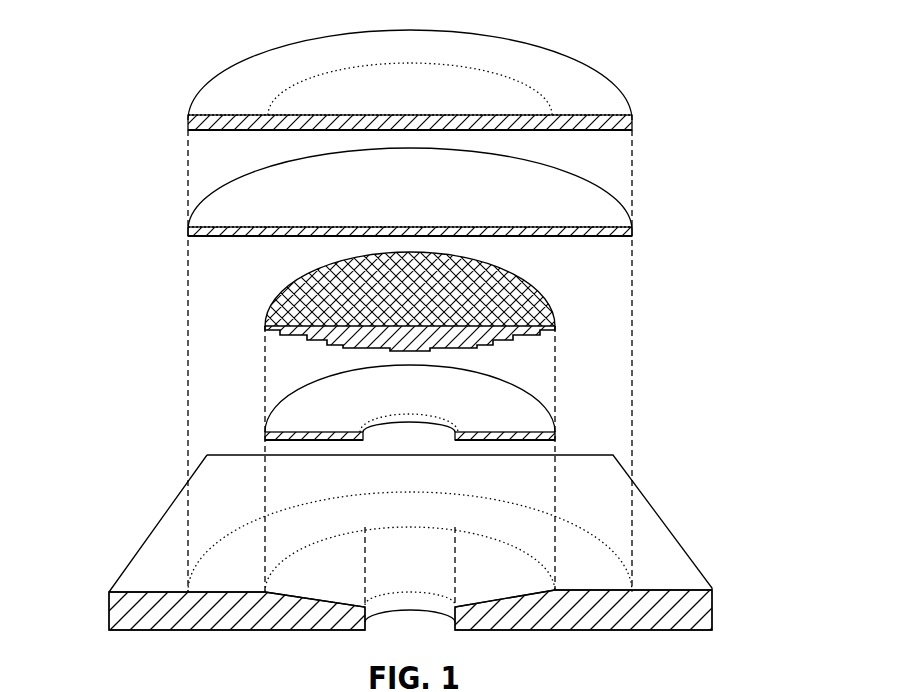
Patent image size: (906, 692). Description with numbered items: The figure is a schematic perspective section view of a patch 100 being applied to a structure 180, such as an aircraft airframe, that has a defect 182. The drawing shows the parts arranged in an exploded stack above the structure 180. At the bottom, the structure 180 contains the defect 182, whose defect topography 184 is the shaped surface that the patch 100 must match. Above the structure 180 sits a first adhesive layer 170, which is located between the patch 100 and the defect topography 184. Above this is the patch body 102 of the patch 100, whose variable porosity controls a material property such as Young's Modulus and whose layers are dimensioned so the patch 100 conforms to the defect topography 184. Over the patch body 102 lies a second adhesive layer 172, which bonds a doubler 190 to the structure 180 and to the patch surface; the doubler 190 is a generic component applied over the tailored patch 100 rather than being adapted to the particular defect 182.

The patch 100 is at (680, 212).
The doubler 190 is at (232, 91).
The second adhesive layer 172 is at (232, 203).
The patch body 102 is at (508, 307).
The first adhesive layer 170 is at (515, 413).
The structure 180 is at (665, 562).
The defect 182 is at (226, 548).
The defect topography 184 is at (515, 562).